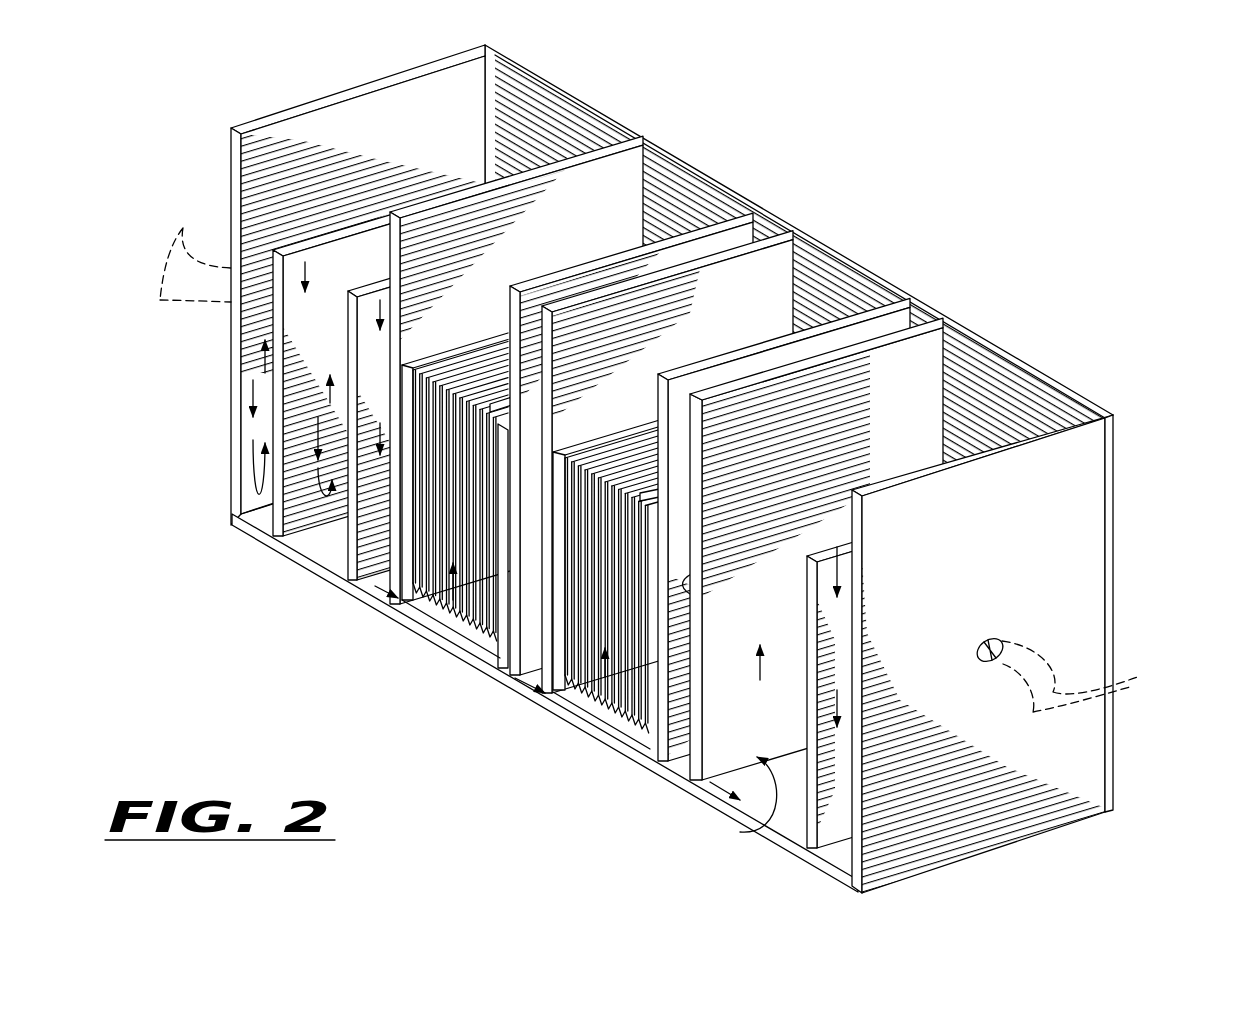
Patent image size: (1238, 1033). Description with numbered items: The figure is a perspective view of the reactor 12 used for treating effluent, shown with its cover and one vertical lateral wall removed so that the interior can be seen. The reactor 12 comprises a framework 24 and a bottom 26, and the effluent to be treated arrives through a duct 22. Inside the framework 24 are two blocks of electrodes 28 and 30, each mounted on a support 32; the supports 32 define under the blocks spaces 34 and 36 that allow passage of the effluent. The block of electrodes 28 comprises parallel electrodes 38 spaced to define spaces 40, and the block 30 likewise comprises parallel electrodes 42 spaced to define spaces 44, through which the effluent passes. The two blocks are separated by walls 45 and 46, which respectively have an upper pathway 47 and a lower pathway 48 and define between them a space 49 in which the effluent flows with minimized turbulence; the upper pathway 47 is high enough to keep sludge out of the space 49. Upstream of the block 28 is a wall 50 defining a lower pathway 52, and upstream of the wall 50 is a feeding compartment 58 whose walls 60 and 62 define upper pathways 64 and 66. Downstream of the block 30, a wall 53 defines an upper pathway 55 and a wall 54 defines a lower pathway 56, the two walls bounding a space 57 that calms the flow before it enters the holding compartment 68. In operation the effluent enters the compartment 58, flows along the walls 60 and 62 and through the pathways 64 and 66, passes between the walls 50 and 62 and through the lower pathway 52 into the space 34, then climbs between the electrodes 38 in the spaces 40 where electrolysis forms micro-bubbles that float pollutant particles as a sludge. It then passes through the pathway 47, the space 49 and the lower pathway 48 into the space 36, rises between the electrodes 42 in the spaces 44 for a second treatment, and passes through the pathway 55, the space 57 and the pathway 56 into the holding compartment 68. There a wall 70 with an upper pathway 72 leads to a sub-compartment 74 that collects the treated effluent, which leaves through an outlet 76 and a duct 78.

The reactor 12 is at (975, 165).
The duct 22 is at (183, 230).
The framework 24 is at (1125, 440).
The bottom 26 is at (262, 538).
The block of electrodes 28 is at (752, 216).
The block of electrodes 30 is at (803, 330).
The support 32 is at (412, 598).
The space 34 is at (490, 650).
The space 36 is at (567, 712).
The electrodes 38 is at (462, 620).
The spaces 40 is at (423, 597).
The electrodes 42 is at (600, 718).
The spaces 44 is at (650, 740).
The wall 45 is at (768, 262).
The wall 46 is at (800, 262).
The upper pathway 47 is at (553, 414).
The lower pathway 48 is at (530, 695).
The space 49 is at (537, 500).
The wall 50 is at (645, 150).
The lower pathway 52 is at (400, 592).
The wall 53 is at (900, 318).
The wall 54 is at (940, 350).
The upper pathway 55 is at (705, 498).
The lower pathway 56 is at (740, 832).
The space 57 is at (700, 597).
The feeding compartment 58 is at (470, 155).
The wall 60 is at (300, 352).
The wall 62 is at (373, 402).
The upper pathway 64 is at (322, 232).
The upper pathway 66 is at (382, 278).
The holding compartment 68 is at (925, 420).
The wall 70 is at (800, 813).
The upper pathway 72 is at (833, 543).
The sub-compartment 74 is at (830, 807).
The outlet 76 is at (1003, 645).
The duct 78 is at (1125, 668).